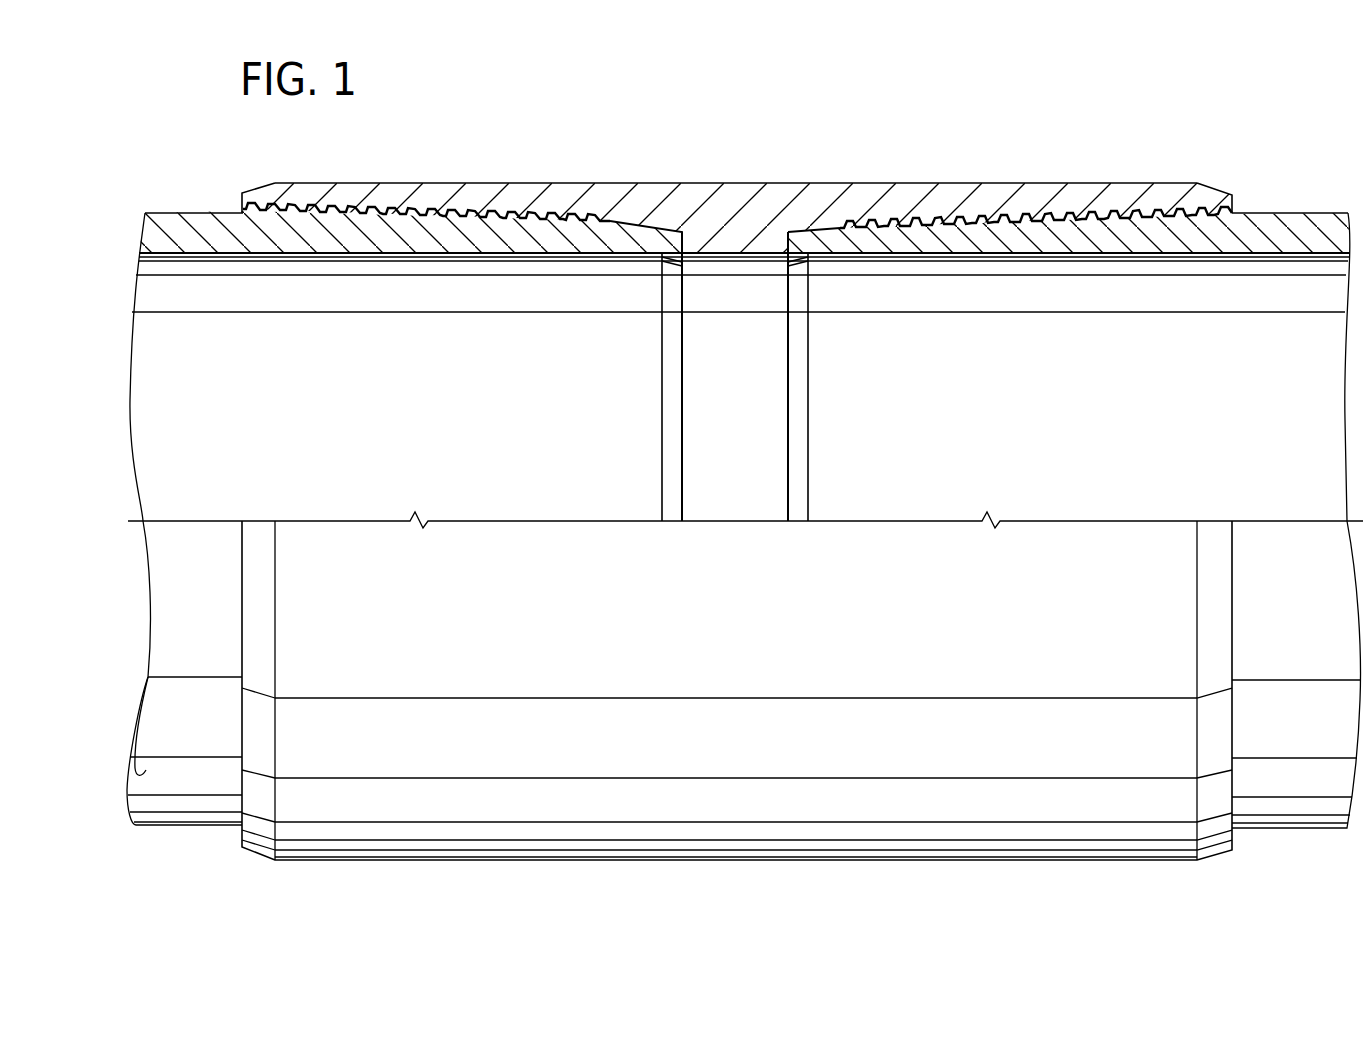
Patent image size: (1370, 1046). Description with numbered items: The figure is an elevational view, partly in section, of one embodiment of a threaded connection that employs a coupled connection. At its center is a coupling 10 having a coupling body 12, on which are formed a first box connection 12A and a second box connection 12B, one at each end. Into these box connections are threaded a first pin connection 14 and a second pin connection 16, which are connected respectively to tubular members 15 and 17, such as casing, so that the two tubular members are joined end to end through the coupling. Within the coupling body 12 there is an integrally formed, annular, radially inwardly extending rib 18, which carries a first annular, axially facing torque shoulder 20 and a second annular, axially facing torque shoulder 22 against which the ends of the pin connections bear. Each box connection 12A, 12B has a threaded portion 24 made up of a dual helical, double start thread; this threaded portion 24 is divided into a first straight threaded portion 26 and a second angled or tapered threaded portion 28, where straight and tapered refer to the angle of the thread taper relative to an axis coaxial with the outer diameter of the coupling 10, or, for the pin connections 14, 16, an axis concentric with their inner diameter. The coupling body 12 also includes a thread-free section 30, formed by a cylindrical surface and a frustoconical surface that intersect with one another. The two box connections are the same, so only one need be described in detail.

The coupling 10 is at (943, 168).
The coupling body 12 is at (528, 192).
The first box connection 12A is at (1095, 175).
The second box connection 12B is at (397, 155).
The first pin connection 14 is at (977, 257).
The tubular member 15 is at (1336, 213).
The second pin connection 16 is at (450, 256).
The tubular member 17 is at (170, 238).
The rib 18 is at (742, 253).
The first torque shoulder 20 is at (788, 233).
The second torque shoulder 22 is at (679, 250).
The threaded portion 24 is at (1008, 210).
The first straight threaded portion 26 is at (889, 218).
The second angled or tapered threaded portion 28 is at (1165, 208).
The thread-free section 30 is at (837, 228).